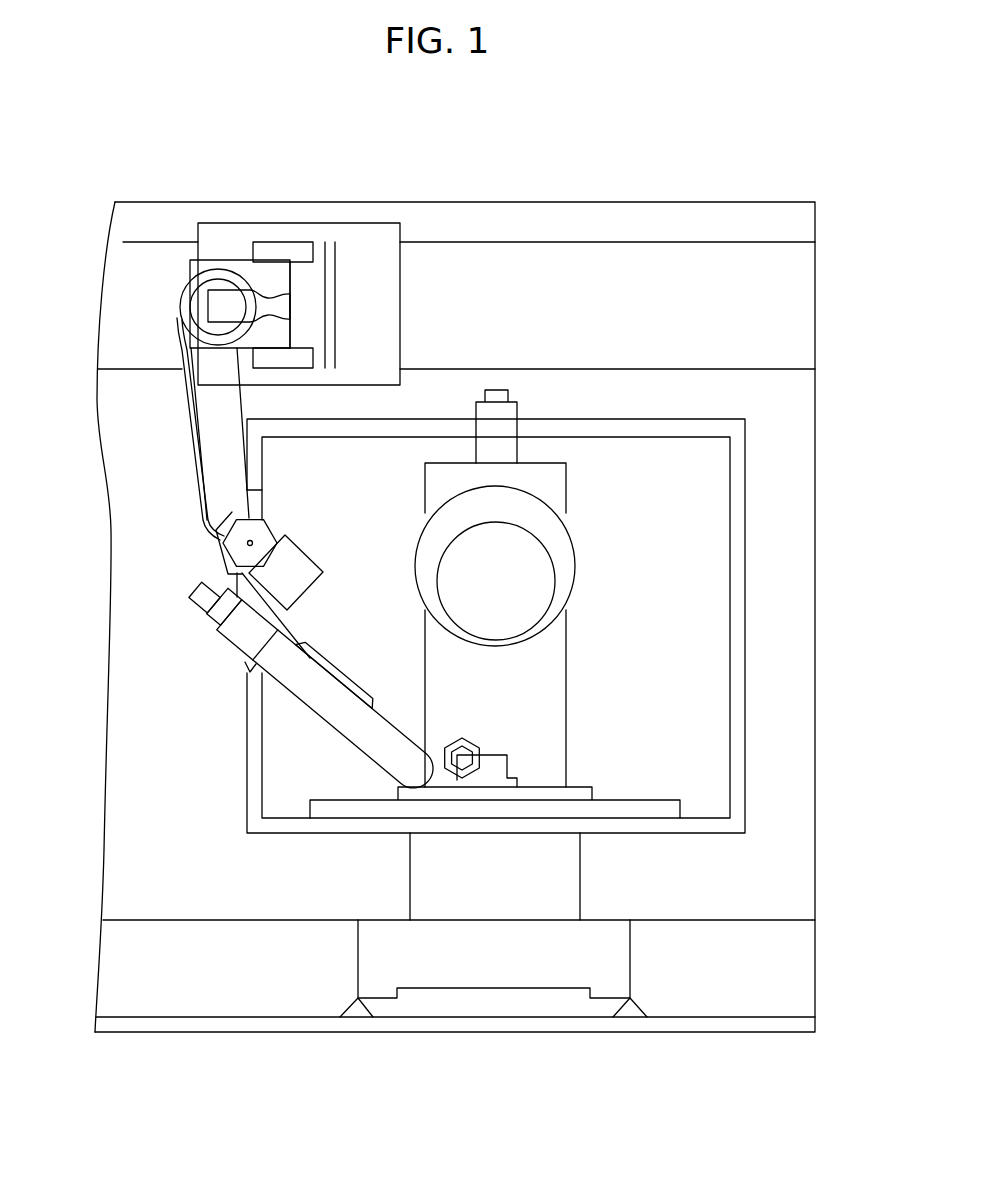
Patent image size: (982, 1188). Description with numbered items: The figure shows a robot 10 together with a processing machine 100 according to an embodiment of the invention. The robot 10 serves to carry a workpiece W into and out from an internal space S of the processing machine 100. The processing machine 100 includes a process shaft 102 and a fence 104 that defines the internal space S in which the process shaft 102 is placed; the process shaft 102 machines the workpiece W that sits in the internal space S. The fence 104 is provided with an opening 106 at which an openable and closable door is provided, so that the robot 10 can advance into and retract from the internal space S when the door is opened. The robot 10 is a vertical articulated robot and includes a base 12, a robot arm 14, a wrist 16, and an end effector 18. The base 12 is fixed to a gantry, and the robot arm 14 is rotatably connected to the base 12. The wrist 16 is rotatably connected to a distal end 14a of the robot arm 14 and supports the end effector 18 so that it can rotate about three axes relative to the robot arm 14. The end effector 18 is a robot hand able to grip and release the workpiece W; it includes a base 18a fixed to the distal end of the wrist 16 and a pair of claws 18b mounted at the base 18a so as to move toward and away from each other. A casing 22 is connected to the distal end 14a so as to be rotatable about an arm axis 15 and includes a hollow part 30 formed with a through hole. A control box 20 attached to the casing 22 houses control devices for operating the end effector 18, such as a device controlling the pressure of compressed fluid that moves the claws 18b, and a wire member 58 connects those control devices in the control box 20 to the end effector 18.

The robot 10 is at (164, 518).
The base 12 is at (372, 277).
The robot arm 14 is at (212, 443).
The distal end 14a is at (212, 548).
The arm axis 15 is at (253, 540).
The wrist 16 is at (309, 718).
The end effector 18 is at (440, 787).
The base 18a is at (432, 750).
The pair of claws 18b is at (488, 750).
The control box 20 is at (201, 599).
The casing 22 is at (299, 566).
The hollow part 30 is at (217, 650).
The wire member 58 is at (228, 623).
The processing machine 100 is at (745, 644).
The process shaft 102 is at (577, 558).
The fence 104 is at (743, 773).
The opening 106 is at (223, 662).
The internal space S is at (657, 487).
The workpiece W is at (542, 665).